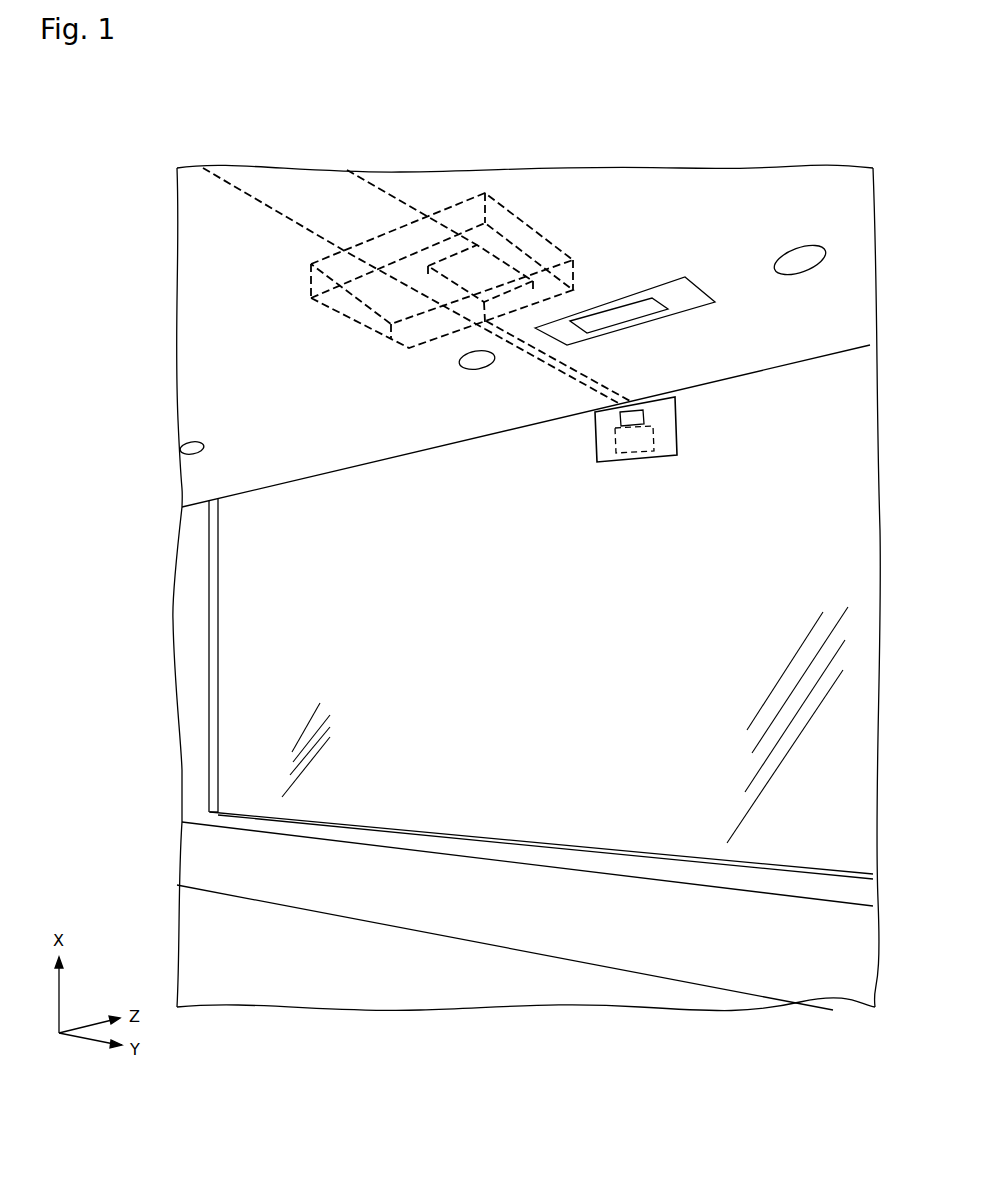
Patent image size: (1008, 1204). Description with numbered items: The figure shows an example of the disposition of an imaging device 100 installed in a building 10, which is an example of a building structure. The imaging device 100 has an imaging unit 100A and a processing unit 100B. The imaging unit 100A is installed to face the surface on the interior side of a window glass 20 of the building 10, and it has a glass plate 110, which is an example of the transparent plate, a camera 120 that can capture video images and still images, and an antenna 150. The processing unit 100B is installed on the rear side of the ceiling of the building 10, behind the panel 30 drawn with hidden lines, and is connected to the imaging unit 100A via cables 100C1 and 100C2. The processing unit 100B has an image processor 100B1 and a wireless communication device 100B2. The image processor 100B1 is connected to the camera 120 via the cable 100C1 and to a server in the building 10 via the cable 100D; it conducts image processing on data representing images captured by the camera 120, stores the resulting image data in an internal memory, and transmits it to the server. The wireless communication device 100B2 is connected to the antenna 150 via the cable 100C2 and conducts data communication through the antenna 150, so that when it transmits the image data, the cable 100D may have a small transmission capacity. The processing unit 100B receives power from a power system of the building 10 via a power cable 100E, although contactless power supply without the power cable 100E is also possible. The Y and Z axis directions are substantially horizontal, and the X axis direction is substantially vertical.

The building 10 is at (164, 624).
The window glass 20 is at (242, 703).
The door panel 30 is at (210, 367).
The imaging device 100 is at (810, 183).
The imaging unit 100A is at (680, 403).
The processing unit 100B is at (538, 308).
The image processor 100B1 is at (393, 333).
The wireless communication device 100B2 is at (485, 322).
The cable 100C1 is at (560, 370).
The cable 100C2 is at (600, 380).
The cable 100D is at (385, 192).
The power cable 100E is at (223, 181).
The glass plate 110 is at (605, 462).
The camera 120 is at (644, 416).
The antenna 150 is at (637, 450).